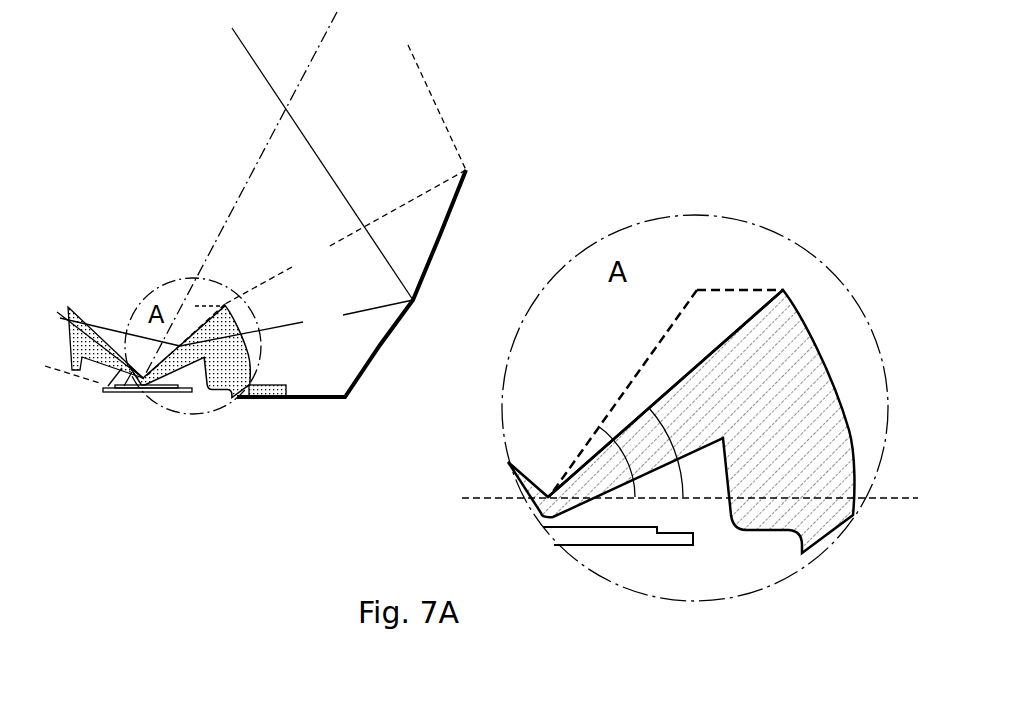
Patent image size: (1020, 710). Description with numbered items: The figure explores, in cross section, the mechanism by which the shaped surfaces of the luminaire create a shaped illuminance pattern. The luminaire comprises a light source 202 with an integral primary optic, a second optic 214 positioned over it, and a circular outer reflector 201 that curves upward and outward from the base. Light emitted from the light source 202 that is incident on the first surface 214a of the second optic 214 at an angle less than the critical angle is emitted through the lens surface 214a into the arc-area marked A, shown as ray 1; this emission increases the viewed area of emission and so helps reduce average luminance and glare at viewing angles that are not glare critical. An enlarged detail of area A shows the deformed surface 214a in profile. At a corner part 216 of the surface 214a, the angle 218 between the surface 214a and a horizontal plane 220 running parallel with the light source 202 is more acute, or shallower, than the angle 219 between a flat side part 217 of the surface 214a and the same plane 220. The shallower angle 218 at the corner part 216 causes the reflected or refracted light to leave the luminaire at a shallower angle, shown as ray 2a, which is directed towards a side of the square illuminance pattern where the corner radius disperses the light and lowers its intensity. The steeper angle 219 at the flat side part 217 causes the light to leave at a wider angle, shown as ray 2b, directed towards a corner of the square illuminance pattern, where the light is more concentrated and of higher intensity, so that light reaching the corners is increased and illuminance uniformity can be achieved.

The ray 1 is at (241, 193).
The ray 2a is at (296, 323).
The ray 2b is at (304, 274).
The circular outer reflector 201 is at (468, 170).
The light source 202 is at (177, 385).
The second optic 214 is at (491, 421).
The first surface 214a is at (722, 343).
The corner part 216 is at (757, 308).
The flat side part 217 is at (635, 372).
The angle 218 is at (655, 450).
The angle 219 is at (600, 472).
The horizontal plane 220 is at (711, 499).